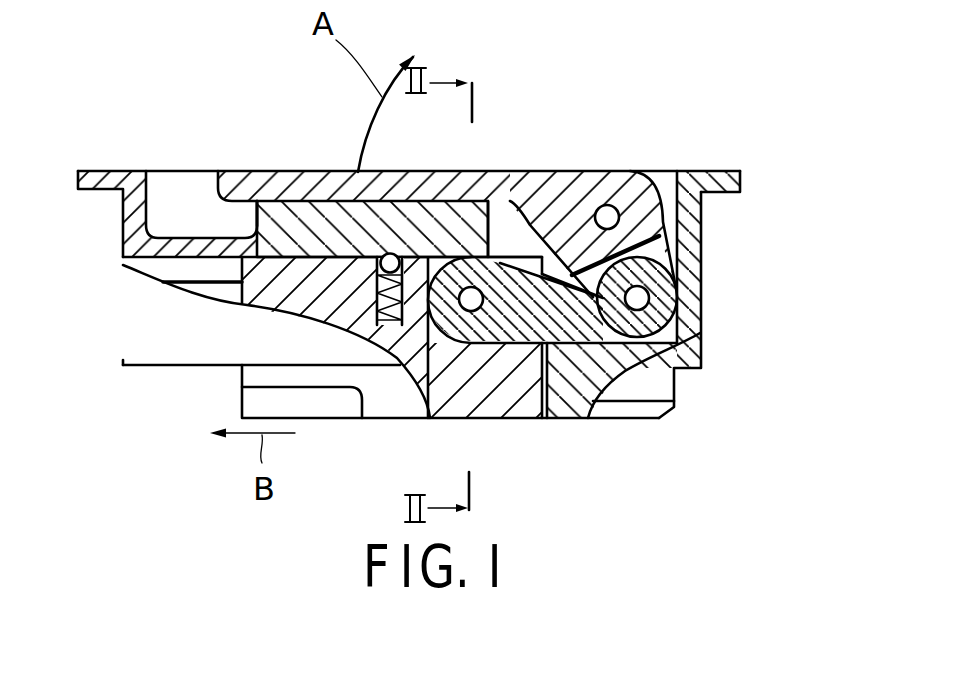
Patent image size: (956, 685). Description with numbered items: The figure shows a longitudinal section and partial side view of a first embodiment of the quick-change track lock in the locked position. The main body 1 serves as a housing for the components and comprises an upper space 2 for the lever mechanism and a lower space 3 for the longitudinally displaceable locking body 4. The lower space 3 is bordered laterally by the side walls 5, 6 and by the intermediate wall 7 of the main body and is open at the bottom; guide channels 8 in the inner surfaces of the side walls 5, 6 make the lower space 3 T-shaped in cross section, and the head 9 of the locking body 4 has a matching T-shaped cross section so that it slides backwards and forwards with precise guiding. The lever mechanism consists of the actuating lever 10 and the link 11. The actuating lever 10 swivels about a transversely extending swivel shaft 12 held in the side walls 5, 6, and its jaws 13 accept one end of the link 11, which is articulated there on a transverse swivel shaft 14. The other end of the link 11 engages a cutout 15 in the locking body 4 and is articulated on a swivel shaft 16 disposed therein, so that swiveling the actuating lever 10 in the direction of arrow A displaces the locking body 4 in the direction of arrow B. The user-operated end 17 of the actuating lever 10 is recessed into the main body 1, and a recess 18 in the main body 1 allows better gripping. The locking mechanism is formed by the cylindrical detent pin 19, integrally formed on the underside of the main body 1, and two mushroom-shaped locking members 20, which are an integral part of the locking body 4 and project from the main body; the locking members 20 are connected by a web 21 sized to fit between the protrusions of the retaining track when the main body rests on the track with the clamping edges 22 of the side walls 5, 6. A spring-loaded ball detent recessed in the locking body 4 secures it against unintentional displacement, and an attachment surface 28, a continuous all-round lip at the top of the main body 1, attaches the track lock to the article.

The main body 1 is at (100, 171).
The upper space 2 is at (658, 160).
The lower space 3 is at (140, 385).
The locking body 4 is at (520, 393).
The side wall 5 is at (505, 227).
The side wall 6 is at (153, 340).
The intermediate wall 7 is at (290, 217).
The guide channels 8 is at (170, 265).
The head 9 is at (323, 267).
The actuating lever 10 is at (425, 173).
The link 11 is at (603, 330).
The swivel shaft 12 is at (607, 205).
The jaws 13 is at (652, 248).
The swivel shaft 14 is at (637, 304).
The cutout 15 is at (442, 333).
The swivel shaft 16 is at (472, 311).
The user-operated end 17 is at (237, 172).
The recess 18 is at (167, 187).
The detent pin 19 is at (655, 383).
The locking members 20 is at (282, 400).
The web 21 is at (408, 392).
The clamping edges 22 is at (155, 370).
The attachment surface 28 is at (718, 177).